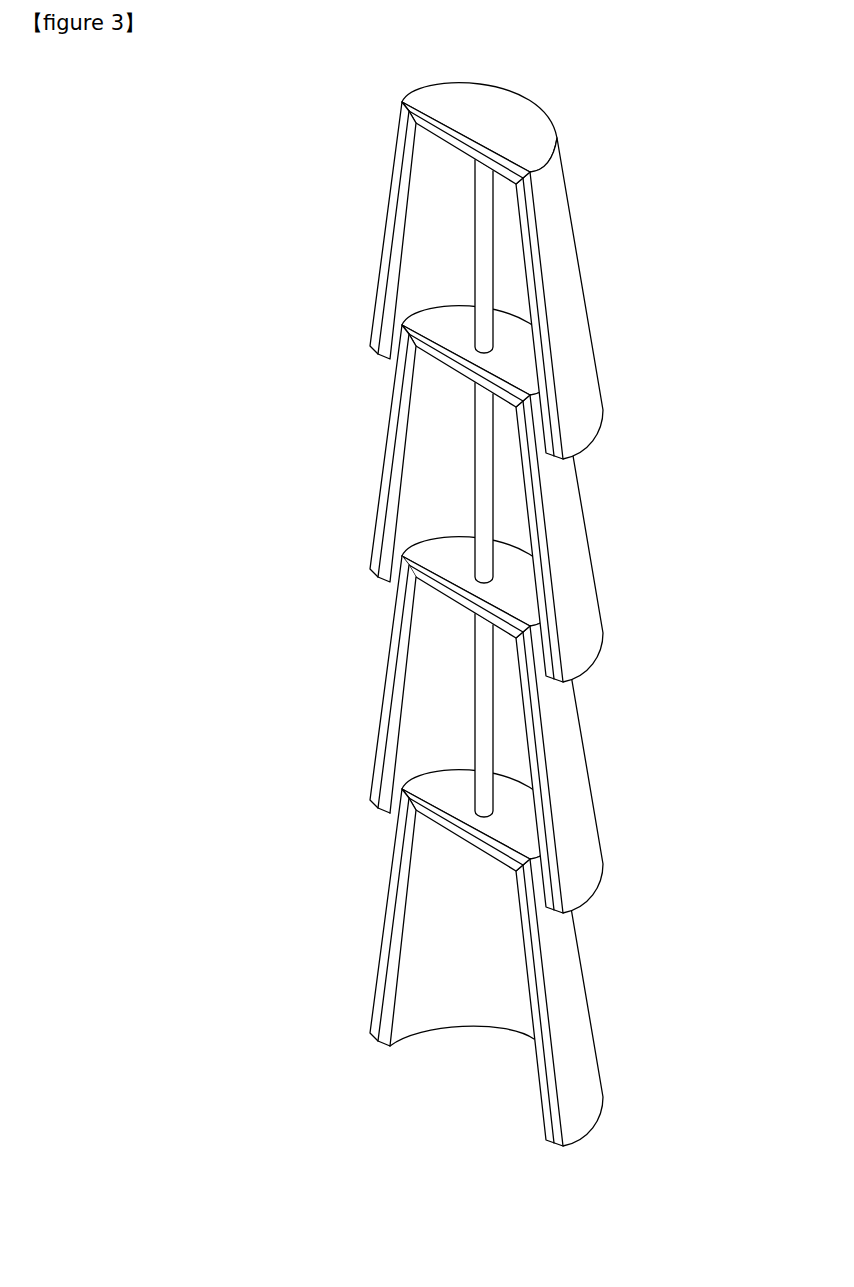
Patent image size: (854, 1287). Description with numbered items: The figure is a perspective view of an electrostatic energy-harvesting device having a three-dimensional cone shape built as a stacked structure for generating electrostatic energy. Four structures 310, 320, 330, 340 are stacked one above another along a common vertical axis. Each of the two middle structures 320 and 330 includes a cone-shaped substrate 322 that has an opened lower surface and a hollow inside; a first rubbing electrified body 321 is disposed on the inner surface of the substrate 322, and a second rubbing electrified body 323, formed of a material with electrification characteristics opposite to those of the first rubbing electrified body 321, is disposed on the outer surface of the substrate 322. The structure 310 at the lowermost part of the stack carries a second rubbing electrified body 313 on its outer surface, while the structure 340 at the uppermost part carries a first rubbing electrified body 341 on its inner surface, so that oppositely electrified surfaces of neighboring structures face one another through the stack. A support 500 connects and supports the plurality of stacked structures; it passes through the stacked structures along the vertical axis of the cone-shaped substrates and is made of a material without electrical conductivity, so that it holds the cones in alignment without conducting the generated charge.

The structure 310 is at (508, 958).
The second rubbing electrified body 313 is at (375, 1001).
The structure 320 is at (503, 725).
The first rubbing electrified body 321 is at (400, 722).
The cone-shaped substrate 322 is at (385, 756).
The second rubbing electrified body 323 is at (373, 788).
The structure 330 is at (592, 487).
The structure 340 is at (502, 271).
The first rubbing electrified body 341 is at (377, 310).
The support 500 is at (483, 688).